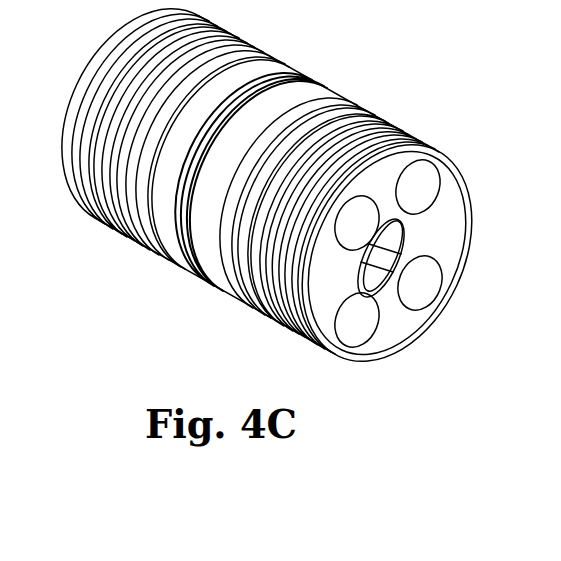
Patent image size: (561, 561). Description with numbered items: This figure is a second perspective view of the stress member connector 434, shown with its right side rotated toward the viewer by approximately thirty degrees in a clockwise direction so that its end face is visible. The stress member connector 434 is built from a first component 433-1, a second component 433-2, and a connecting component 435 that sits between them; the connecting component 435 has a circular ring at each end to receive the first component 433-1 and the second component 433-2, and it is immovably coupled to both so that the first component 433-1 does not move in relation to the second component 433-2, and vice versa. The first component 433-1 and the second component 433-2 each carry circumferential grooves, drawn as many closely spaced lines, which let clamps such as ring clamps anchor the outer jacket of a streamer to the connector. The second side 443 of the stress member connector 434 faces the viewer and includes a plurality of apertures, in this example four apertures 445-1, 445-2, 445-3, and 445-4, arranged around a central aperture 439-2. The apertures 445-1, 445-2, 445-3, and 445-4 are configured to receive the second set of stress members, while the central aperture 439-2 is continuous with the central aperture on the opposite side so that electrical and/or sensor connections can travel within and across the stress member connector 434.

The stress member connector 434 is at (312, 406).
The first component 433-1 is at (143, 251).
The connecting component 435 is at (143, 251).
The second component 433-2 is at (327, 362).
The second side 443 is at (392, 323).
The aperture 445-1 is at (368, 208).
The aperture 445-2 is at (358, 327).
The aperture 445-3 is at (423, 185).
The aperture 445-4 is at (422, 287).
The central aperture 439-2 is at (404, 240).